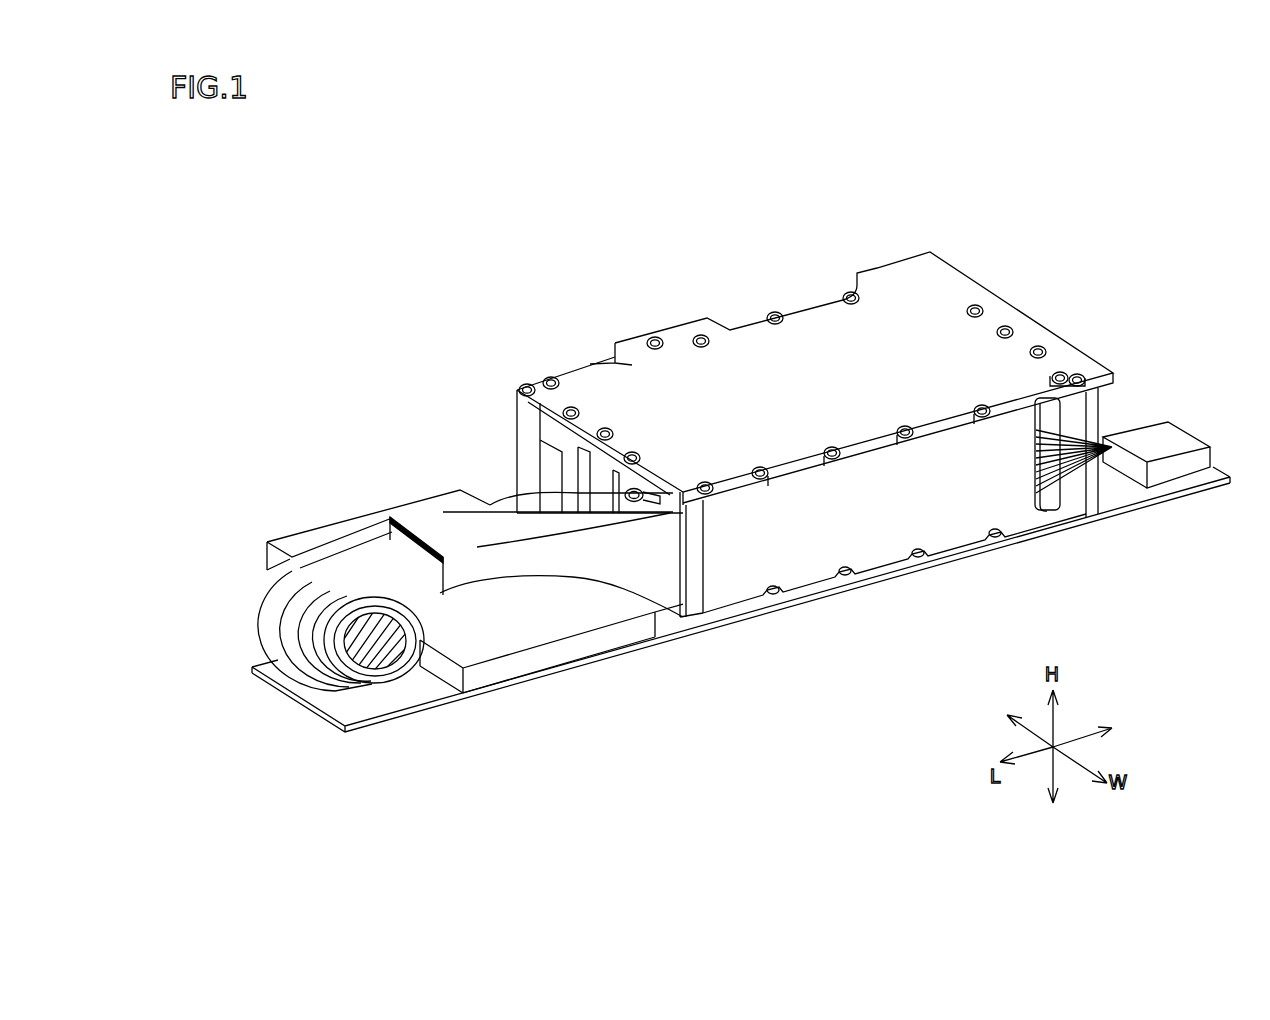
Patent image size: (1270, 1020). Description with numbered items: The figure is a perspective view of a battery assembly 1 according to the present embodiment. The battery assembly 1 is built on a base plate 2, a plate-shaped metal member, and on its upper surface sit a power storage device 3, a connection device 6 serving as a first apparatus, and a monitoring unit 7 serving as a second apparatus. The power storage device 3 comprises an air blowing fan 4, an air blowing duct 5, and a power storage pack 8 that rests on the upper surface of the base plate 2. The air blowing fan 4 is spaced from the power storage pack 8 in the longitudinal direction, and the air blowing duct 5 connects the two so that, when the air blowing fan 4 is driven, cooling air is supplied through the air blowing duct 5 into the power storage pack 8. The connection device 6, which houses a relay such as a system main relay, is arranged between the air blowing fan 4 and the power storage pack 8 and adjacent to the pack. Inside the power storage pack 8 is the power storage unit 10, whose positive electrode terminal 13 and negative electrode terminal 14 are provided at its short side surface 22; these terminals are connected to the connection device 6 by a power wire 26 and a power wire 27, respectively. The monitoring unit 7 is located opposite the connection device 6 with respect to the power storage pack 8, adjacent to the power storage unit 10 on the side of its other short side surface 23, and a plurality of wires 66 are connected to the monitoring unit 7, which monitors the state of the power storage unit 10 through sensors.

The battery assembly 1 is at (951, 180).
The base plate 2 is at (420, 712).
The power storage device 3 is at (728, 288).
The air blowing fan 4 is at (343, 540).
The air blowing duct 5 is at (432, 523).
The connection device 6 is at (528, 667).
The monitoring unit 7 is at (1160, 437).
The power storage pack 8 is at (790, 348).
The power storage unit 10 is at (898, 438).
The positive electrode terminal 13 is at (517, 388).
The negative electrode terminal 14 is at (645, 488).
The short side surface 22 is at (550, 480).
The short side surface 23 is at (1101, 333).
The power wire 26 is at (518, 428).
The power wire 27 is at (597, 490).
The wires 66 is at (1080, 485).